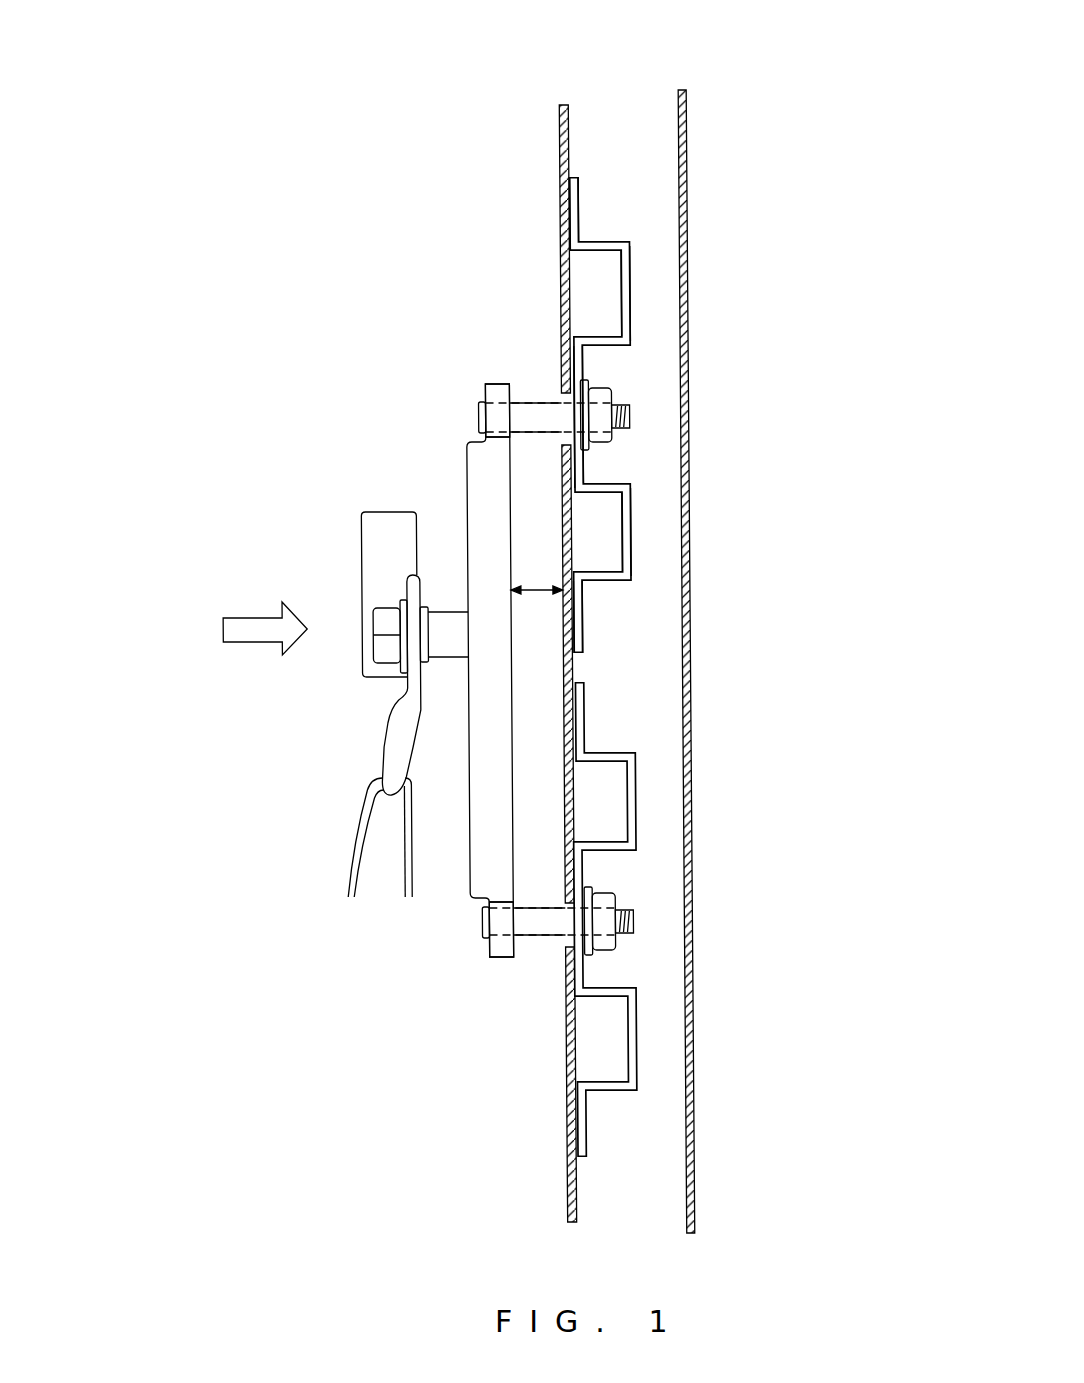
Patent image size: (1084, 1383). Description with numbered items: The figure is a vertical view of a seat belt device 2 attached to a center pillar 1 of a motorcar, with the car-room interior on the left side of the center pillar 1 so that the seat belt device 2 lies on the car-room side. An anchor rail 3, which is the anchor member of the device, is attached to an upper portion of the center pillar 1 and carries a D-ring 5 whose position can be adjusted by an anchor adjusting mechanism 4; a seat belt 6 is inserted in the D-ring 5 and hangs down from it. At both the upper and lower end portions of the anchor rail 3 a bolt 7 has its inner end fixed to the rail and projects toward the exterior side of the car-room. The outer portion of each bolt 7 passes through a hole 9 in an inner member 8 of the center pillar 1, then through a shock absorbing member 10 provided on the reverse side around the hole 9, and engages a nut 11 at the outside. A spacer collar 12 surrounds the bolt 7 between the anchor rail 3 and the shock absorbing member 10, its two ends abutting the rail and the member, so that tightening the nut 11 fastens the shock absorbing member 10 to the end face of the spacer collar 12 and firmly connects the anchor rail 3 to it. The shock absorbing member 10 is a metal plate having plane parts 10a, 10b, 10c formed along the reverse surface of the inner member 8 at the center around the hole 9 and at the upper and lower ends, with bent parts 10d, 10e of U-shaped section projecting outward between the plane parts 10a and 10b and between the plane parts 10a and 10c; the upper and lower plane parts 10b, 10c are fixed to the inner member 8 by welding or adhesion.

The center pillar 1 is at (634, 81).
The seat belt device 2 is at (414, 437).
The anchor rail 3 is at (482, 775).
The anchor adjusting mechanism 4 is at (377, 551).
The D-ring 5 is at (386, 749).
The seat belt 6 is at (348, 842).
The bolt 7 is at (632, 418).
The inner member 8 is at (558, 146).
The hole 9 is at (557, 396).
The shock absorbing member 10 is at (612, 240).
The plane part 10a is at (580, 362).
The plane part 10b is at (579, 195).
The plane part 10c is at (582, 636).
The bent part 10d is at (633, 296).
The bent part 10e is at (633, 544).
The nut 11 is at (605, 389).
The spacer collar 12 is at (517, 396).